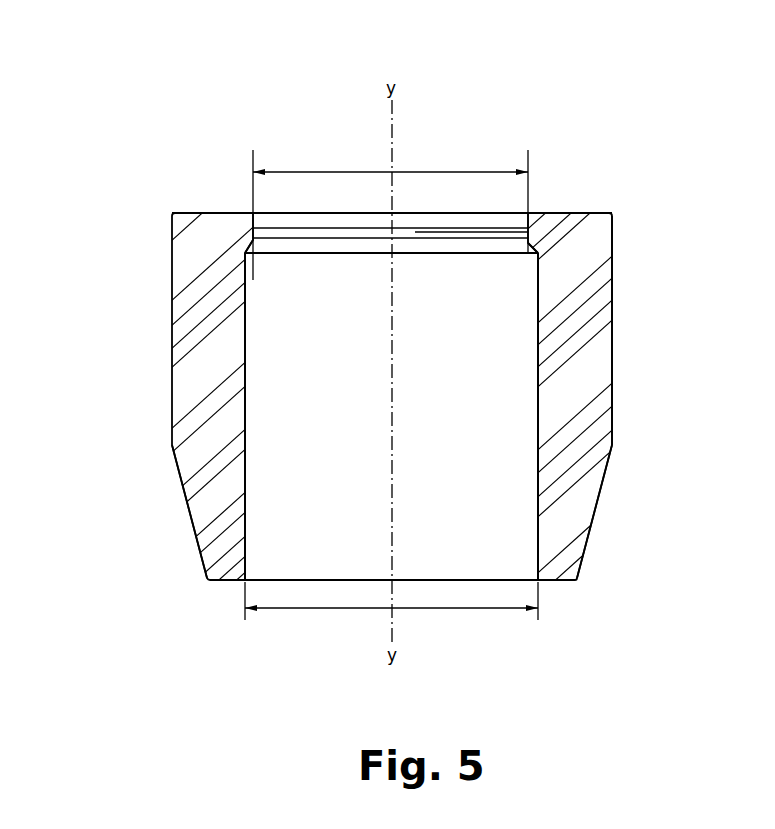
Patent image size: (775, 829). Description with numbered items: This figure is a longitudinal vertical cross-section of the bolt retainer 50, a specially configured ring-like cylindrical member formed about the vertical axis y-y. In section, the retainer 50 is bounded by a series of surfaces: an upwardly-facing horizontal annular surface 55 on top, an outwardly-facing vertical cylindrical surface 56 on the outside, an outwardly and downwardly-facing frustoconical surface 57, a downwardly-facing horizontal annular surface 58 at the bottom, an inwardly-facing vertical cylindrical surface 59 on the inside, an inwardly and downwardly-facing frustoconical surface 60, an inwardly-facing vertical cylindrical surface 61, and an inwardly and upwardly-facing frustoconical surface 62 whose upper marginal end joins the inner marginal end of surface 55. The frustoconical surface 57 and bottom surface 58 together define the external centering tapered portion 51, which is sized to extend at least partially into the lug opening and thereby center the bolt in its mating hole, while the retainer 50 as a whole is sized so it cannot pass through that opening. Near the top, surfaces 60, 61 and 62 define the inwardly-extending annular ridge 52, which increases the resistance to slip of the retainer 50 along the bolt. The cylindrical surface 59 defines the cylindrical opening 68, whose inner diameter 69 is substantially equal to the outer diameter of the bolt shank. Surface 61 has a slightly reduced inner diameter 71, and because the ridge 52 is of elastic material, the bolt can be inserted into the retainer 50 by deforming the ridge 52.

The retainer 50 is at (143, 218).
The external centering tapered portion 51 is at (163, 533).
The inwardly-extending annular ridge 52 is at (316, 256).
The upwardly-facing horizontal annular surface 55 is at (578, 213).
The outwardly-facing vertical cylindrical surface 56 is at (612, 305).
The outwardly and downwardly-facing frustoconical surface 57 is at (592, 520).
The downwardly-facing horizontal annular surface 58 is at (565, 585).
The inwardly-facing vertical cylindrical surface 59 is at (538, 452).
The inwardly and downwardly-facing frustoconical surface 60 is at (530, 243).
The inwardly-facing vertical cylindrical surface 61 is at (470, 233).
The inwardly and upwardly-facing frustoconical surface 62 is at (528, 216).
The cylindrical opening 68 is at (339, 488).
The inner diameter 69 is at (438, 612).
The reduced inner diameter 71 is at (423, 170).